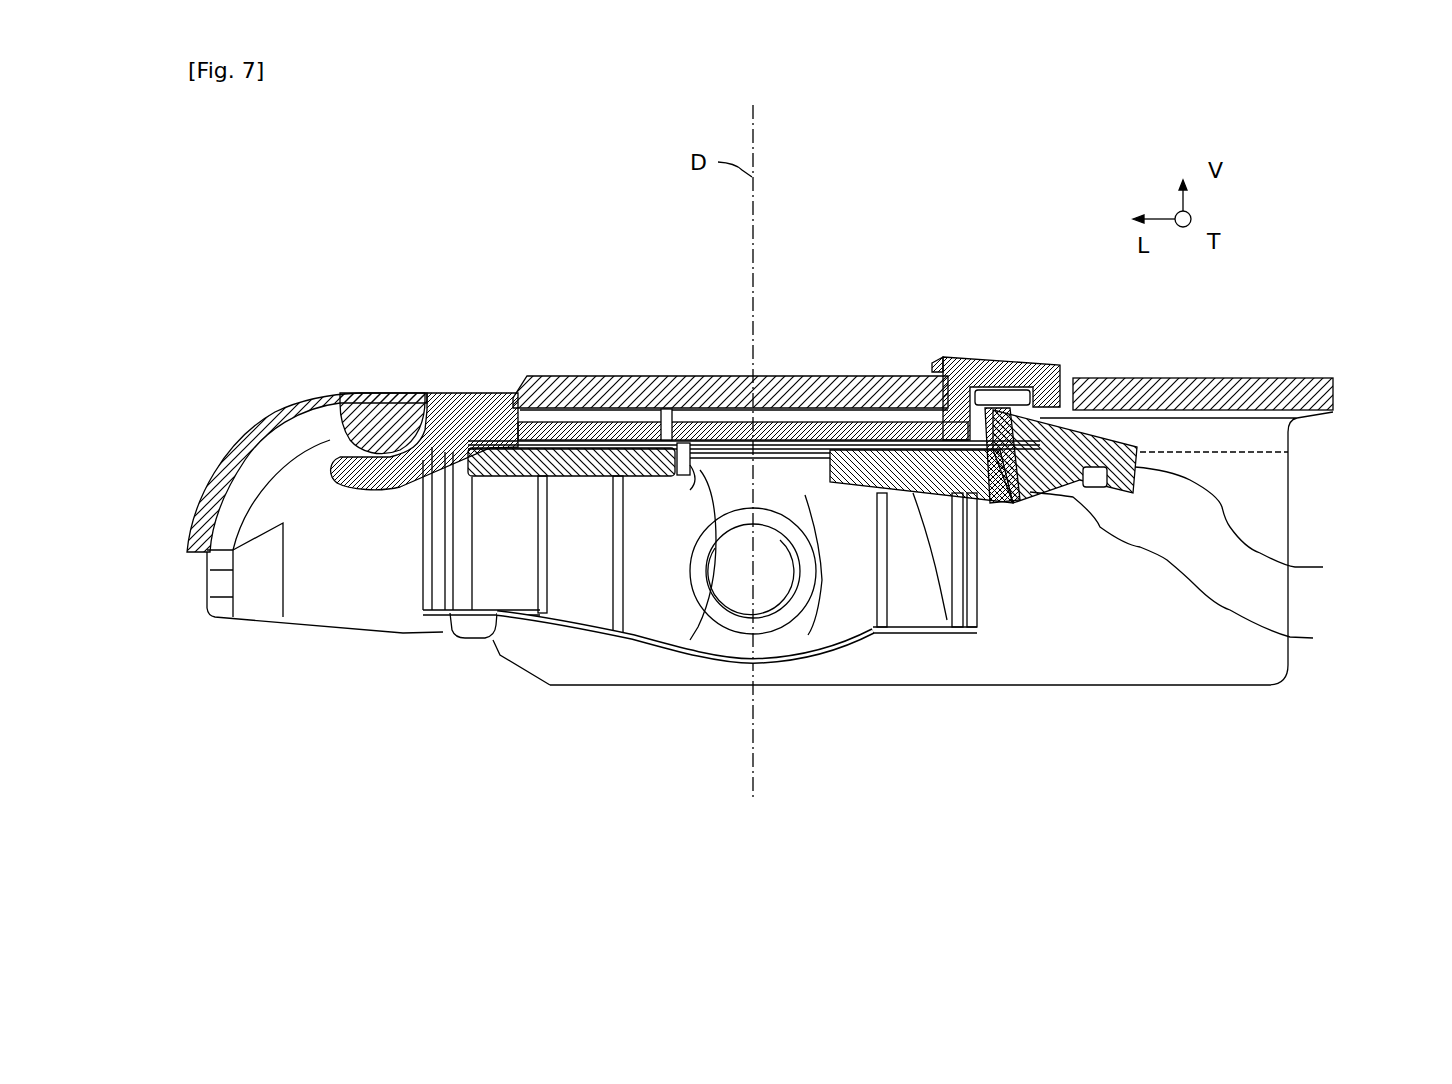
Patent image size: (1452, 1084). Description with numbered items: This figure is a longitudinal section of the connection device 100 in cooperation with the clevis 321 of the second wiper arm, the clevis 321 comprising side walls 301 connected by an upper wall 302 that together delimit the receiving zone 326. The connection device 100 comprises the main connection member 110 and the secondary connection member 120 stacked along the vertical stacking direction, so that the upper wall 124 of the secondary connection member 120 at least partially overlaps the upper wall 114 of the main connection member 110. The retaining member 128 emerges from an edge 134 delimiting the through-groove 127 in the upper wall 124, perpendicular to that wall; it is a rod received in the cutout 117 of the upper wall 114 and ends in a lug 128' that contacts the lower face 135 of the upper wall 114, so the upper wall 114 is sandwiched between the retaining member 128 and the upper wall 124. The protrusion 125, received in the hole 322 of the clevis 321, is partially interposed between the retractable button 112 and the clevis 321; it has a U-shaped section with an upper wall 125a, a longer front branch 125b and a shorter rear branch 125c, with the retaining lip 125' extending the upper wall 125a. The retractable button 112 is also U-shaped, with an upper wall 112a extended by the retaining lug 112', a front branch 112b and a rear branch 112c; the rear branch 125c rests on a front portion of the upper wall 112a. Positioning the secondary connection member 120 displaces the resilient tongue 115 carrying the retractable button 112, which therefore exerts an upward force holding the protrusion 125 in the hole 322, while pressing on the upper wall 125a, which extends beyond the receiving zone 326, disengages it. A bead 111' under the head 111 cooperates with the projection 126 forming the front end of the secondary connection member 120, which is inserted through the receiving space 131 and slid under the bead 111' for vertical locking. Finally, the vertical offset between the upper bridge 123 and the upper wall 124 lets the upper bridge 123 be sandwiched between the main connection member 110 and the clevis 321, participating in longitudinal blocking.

The connection device 100 is at (272, 274).
The main connection member 110 is at (275, 386).
The head 111 is at (292, 464).
The bead 111' is at (339, 368).
The retractable button 112 is at (941, 571).
The retaining lug 112' is at (987, 335).
The upper wall of the retractable button 112a is at (1170, 377).
The front branch of the retractable button 112b is at (1209, 573).
The rear branch of the retractable button 112c is at (1266, 522).
The upper wall of the main connection member 114 is at (550, 492).
The resilient tongue 115 is at (970, 633).
The cutout 117 is at (800, 490).
The secondary connection member 120 is at (737, 377).
The upper bridge 123 is at (470, 390).
The upper wall of the secondary connection member 124 is at (575, 378).
The protrusion 125 is at (989, 338).
The retaining lip 125' is at (907, 316).
The upper wall of the protrusion 125a is at (1013, 363).
The front branch of the protrusion 125b is at (927, 377).
The rear branch of the protrusion 125c is at (1093, 377).
The projection 126 is at (352, 468).
The through-groove 127 is at (660, 378).
The retaining member 128 is at (685, 676).
The lug 128' is at (643, 602).
The receiving space 131 is at (422, 380).
The edge 134 is at (668, 400).
The lower face 135 is at (618, 478).
The side walls 301 is at (1060, 673).
The upper wall 302 is at (843, 377).
The clevis 321 is at (773, 328).
The hole 322 is at (1069, 365).
The receiving zone 326 is at (1268, 434).